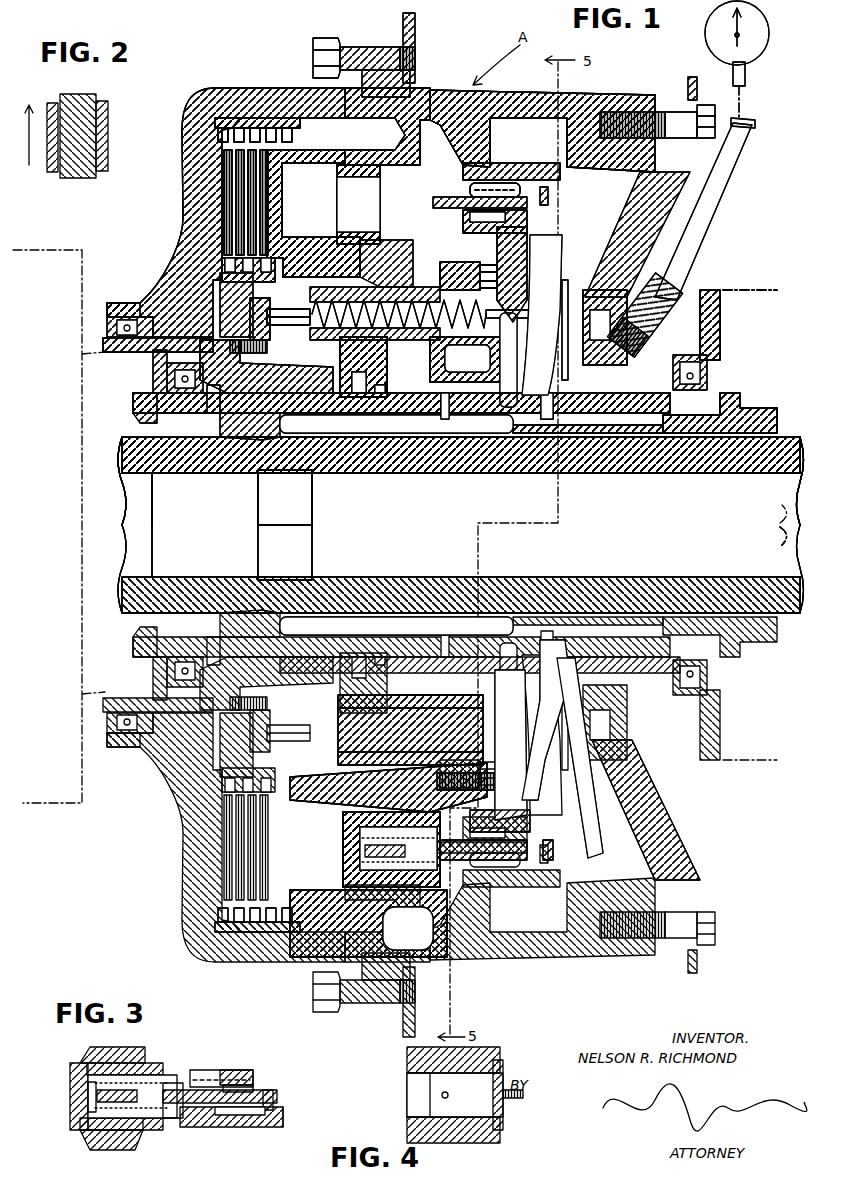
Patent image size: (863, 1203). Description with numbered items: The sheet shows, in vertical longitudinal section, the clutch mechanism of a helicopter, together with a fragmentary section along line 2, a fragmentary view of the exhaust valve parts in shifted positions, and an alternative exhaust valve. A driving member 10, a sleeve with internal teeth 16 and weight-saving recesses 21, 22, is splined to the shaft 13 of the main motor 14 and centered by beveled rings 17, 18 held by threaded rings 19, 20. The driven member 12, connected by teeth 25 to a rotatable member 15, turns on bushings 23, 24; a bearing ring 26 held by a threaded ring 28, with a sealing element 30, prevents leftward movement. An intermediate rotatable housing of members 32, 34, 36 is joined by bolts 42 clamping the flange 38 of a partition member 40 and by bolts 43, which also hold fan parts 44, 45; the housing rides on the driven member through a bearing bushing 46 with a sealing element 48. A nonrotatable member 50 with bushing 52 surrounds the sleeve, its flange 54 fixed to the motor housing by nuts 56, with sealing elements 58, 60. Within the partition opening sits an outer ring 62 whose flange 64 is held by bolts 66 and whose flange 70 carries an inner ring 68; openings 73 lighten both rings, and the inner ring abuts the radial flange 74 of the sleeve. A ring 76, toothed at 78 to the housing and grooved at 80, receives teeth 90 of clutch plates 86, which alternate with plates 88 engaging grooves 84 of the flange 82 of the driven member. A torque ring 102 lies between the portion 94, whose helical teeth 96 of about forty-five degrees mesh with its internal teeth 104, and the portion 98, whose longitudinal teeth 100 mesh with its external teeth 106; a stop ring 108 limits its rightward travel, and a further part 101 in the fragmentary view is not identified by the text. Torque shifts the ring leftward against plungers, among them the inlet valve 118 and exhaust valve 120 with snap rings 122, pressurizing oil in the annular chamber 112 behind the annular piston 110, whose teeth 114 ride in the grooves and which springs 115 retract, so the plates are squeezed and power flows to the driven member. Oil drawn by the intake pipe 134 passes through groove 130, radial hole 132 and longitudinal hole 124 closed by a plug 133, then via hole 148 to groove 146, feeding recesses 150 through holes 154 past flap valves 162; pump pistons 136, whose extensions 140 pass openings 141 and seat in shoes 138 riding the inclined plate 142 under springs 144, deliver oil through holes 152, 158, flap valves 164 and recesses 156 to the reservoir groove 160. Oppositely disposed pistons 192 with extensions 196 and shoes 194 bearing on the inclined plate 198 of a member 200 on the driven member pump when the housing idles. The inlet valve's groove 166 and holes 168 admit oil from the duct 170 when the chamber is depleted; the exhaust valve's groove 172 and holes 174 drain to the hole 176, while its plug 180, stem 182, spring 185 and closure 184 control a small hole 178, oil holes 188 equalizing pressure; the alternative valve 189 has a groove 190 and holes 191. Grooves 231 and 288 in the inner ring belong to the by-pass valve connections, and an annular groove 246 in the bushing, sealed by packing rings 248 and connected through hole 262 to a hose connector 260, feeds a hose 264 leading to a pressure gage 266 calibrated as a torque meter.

In FIG. 1, the section line 2 is at (445, 200).
In FIG. 1, the driving member 10 is at (638, 433).
In FIG. 1, the driven member 12 is at (235, 340).
In FIG. 1, the shaft 13 is at (540, 473).
In FIG. 1, the main helicopter motor 14 is at (755, 287).
In FIG. 1, the rotatable member 15 is at (103, 344).
In FIG. 1, the internal integral teeth 16 is at (470, 440).
In FIG. 1, the beveled ring 17 is at (697, 436).
In FIG. 1, the beveled ring 18 is at (250, 442).
In FIG. 1, the ring 19 is at (745, 395).
In FIG. 1, the ring 20 is at (222, 445).
In FIG. 1, the annular recess 21 is at (385, 585).
In FIG. 1, the annular recess 22 is at (540, 598).
In FIG. 1, the bearing bushing 23 is at (266, 366).
In FIG. 1, the bearing bushing 24 is at (266, 366).
In FIG. 1, the internal integral teeth 25 is at (128, 355).
In FIG. 1, the bearing ring 26 is at (209, 392).
In FIG. 1, the ring 28 is at (135, 402).
In FIG. 1, the annular sealing element 30 is at (167, 378).
In FIG. 1, the housing member 32 is at (185, 160).
In FIG. 1, the housing member 34 is at (472, 105).
In FIG. 1, the housing member 36 is at (665, 180).
In FIG. 1, the annular flange 38 is at (372, 46).
In FIG. 1, the partition member 40 is at (388, 160).
In FIG. 1, the bolts 42 is at (313, 50).
In FIG. 1, the bolts 43 is at (708, 140).
In FIG. 1, the fan part 44 is at (412, 30).
In FIG. 1, the fan part 45 is at (697, 90).
In FIG. 1, the housing wall 46 is at (226, 212).
In FIG. 1, the annular sealing element 48 is at (110, 308).
In FIG. 1, the nonrotatable member 50 is at (565, 393).
In FIG. 1, the bearing bushing 52 is at (401, 390).
In FIG. 1, the annular flange 54 is at (706, 340).
In FIG. 1, the nuts 56 is at (706, 290).
In FIG. 1, the annular sealing element 58 is at (712, 370).
In FIG. 1, the bracket 60 is at (585, 300).
In FIG. 1, the ring 62 is at (335, 292).
In FIG. 1, the outwardly extending flange 64 is at (488, 265).
In FIG. 1, the bolts 66 is at (462, 262).
In FIG. 1, the inner ring 68 is at (342, 368).
In FIG. 1, the inwardly extending flange 70 is at (342, 352).
In FIG. 1, the openings 73 is at (408, 700).
In FIG. 1, the radial annular flange 74 is at (512, 390).
In FIG. 1, the ring 76 is at (300, 122).
In FIG. 1, the interengaging integral teeth 78 is at (275, 120).
In FIG. 1, the longitudinal internal grooves 80 is at (272, 160).
In FIG. 1, the annular flange 82 is at (222, 290).
In FIG. 1, the longitudinal external grooves 84 is at (222, 268).
In FIG. 1, the friction clutch plates 86 is at (260, 205).
In FIG. 1, the friction clutch plates 88 is at (255, 220).
In FIG. 1, the outwardly projecting teeth 90 is at (245, 128).
In FIG. 1, the longitudinal annular flange 94 is at (470, 218).
In FIG. 2, the longitudinal annular flange 94 is at (105, 160).
In FIG. 1, the external teeth 96 is at (528, 222).
In FIG. 2, the external teeth 96 is at (105, 125).
In FIG. 3, the external teeth 96 is at (236, 1072).
In FIG. 1, the longitudinal annular flange 98 is at (560, 170).
In FIG. 1, the longitudinal teeth 100 is at (550, 190).
In FIG. 3, the longitudinal teeth 100 is at (285, 1115).
In FIG. 3, the tube 101 is at (258, 1088).
In FIG. 1, the torque ring 102 is at (468, 185).
In FIG. 2, the torque ring 102 is at (105, 97).
In FIG. 3, the torque ring 102 is at (205, 1065).
In FIG. 4, the torque ring 102 is at (512, 1090).
In FIG. 1, the internal teeth 104 is at (516, 240).
In FIG. 1, the external teeth 106 is at (500, 183).
In FIG. 3, the external teeth 106 is at (240, 1120).
In FIG. 1, the stop ring 108 is at (549, 196).
In FIG. 3, the stop ring 108 is at (285, 1104).
In FIG. 1, the piston 110 is at (330, 250).
In FIG. 1, the annular chamber 112 is at (342, 206).
In FIG. 1, the teeth 114 is at (287, 140).
In FIG. 1, the springs 115 is at (242, 925).
In FIG. 1, the plunger 118 is at (470, 165).
In FIG. 1, the plunger 120 is at (452, 928).
In FIG. 3, the plunger 120 is at (175, 1118).
In FIG. 1, the snap ring 122 is at (337, 170).
In FIG. 1, the oil hole 124 is at (372, 433).
In FIG. 1, the annular oil groove 130 is at (555, 646).
In FIG. 1, the radial oil hole 132 is at (547, 413).
In FIG. 1, the plug 133 is at (690, 436).
In FIG. 1, the oil intake pipe 134 is at (596, 845).
In FIG. 1, the piston 136 is at (465, 359).
In FIG. 1, the shoe 138 is at (530, 275).
In FIG. 1, the extension 140 is at (470, 333).
In FIG. 1, the openings 141 is at (512, 276).
In FIG. 1, the abutment plate 142 is at (565, 300).
In FIG. 1, the spring 144 is at (363, 367).
In FIG. 1, the annular oil groove 146 is at (448, 440).
In FIG. 1, the radial oil hole 148 is at (449, 413).
In FIG. 1, the recess 150 is at (430, 348).
In FIG. 1, the oil hole 152 is at (365, 374).
In FIG. 1, the oil hole 154 is at (380, 388).
In FIG. 1, the recess 156 is at (445, 280).
In FIG. 1, the oil hole 158 is at (390, 265).
In FIG. 1, the annular oil groove 160 is at (410, 275).
In FIG. 1, the flap valve 162 is at (395, 417).
In FIG. 1, the flap valve 164 is at (364, 204).
In FIG. 1, the annular oil groove 166 is at (390, 178).
In FIG. 1, the oil holes 168 is at (372, 205).
In FIG. 1, the radial oil hole 170 is at (380, 255).
In FIG. 1, the annular oil groove 172 is at (410, 905).
In FIG. 3, the annular oil groove 172 is at (92, 1145).
In FIG. 1, the oil holes 174 is at (352, 814).
In FIG. 3, the oil holes 174 is at (125, 1060).
In FIG. 1, the radial oil drain hole 176 is at (432, 892).
In FIG. 3, the radial oil drain hole 176 is at (125, 1148).
In FIG. 4, the radial oil drain hole 176 is at (470, 1143).
In FIG. 1, the hole 178 is at (343, 851).
In FIG. 3, the hole 178 is at (88, 1097).
In FIG. 1, the plug 180 is at (425, 775).
In FIG. 3, the plug 180 is at (178, 1090).
In FIG. 1, the stem 182 is at (392, 838).
In FIG. 3, the stem 182 is at (135, 1092).
In FIG. 1, the closure 184 is at (343, 836).
In FIG. 3, the closure 184 is at (90, 1085).
In FIG. 1, the spring 185 is at (395, 860).
In FIG. 3, the spring 185 is at (135, 1105).
In FIG. 1, the oil holes 188 is at (372, 135).
In FIG. 4, the alternative valve 189 is at (500, 1130).
In FIG. 1, the annular oil groove 190 is at (492, 140).
In FIG. 4, the annular oil groove 190 is at (450, 1143).
In FIG. 4, the oil holes 191 is at (430, 1112).
In FIG. 1, the piston 192 is at (315, 328).
In FIG. 1, the shoe 194 is at (270, 302).
In FIG. 1, the piston extension 196 is at (290, 326).
In FIG. 1, the plate 198 is at (270, 292).
In FIG. 1, the member 200 is at (250, 352).
In FIG. 1, the annular oil groove 231 is at (410, 433).
In FIG. 1, the annular oil groove 246 is at (598, 428).
In FIG. 1, the packing rings 248 is at (650, 395).
In FIG. 1, the hose connector 260 is at (665, 298).
In FIG. 1, the oil hole 262 is at (605, 327).
In FIG. 1, the hose 264 is at (748, 75).
In FIG. 1, the pressure gage 266 is at (764, 42).
In FIG. 1, the annular groove 288 is at (345, 420).